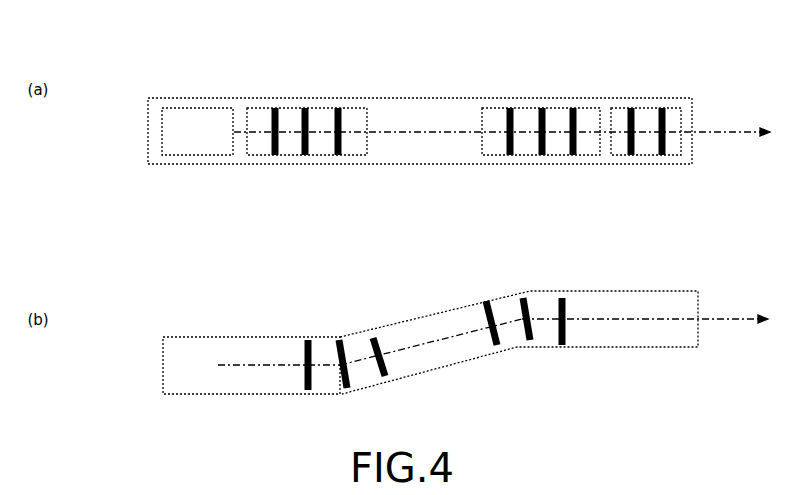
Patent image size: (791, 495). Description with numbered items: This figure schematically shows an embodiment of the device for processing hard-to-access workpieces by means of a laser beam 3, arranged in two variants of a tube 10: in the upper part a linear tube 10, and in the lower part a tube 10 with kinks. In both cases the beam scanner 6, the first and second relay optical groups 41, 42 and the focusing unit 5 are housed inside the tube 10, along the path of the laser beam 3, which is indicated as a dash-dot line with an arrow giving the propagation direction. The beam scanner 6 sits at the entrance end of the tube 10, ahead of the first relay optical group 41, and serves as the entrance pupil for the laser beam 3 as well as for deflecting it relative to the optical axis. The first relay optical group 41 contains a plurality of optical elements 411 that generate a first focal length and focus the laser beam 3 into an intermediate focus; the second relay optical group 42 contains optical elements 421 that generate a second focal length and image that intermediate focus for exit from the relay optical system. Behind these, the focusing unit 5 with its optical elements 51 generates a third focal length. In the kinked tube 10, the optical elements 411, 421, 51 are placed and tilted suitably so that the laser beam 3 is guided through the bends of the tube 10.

The tube 10 is at (418, 96).
The laser beam 3 is at (726, 122).
The beam scanner 6 is at (197, 131).
The first relay optical group 41 is at (323, 100).
The second relay optical group 42 is at (561, 102).
The focusing unit 5 is at (646, 102).
The optical elements of the first relay optical group 411 is at (369, 320).
The optical elements of the second relay optical group 421 is at (510, 157).
The optical elements of the focusing unit 51 is at (631, 157).